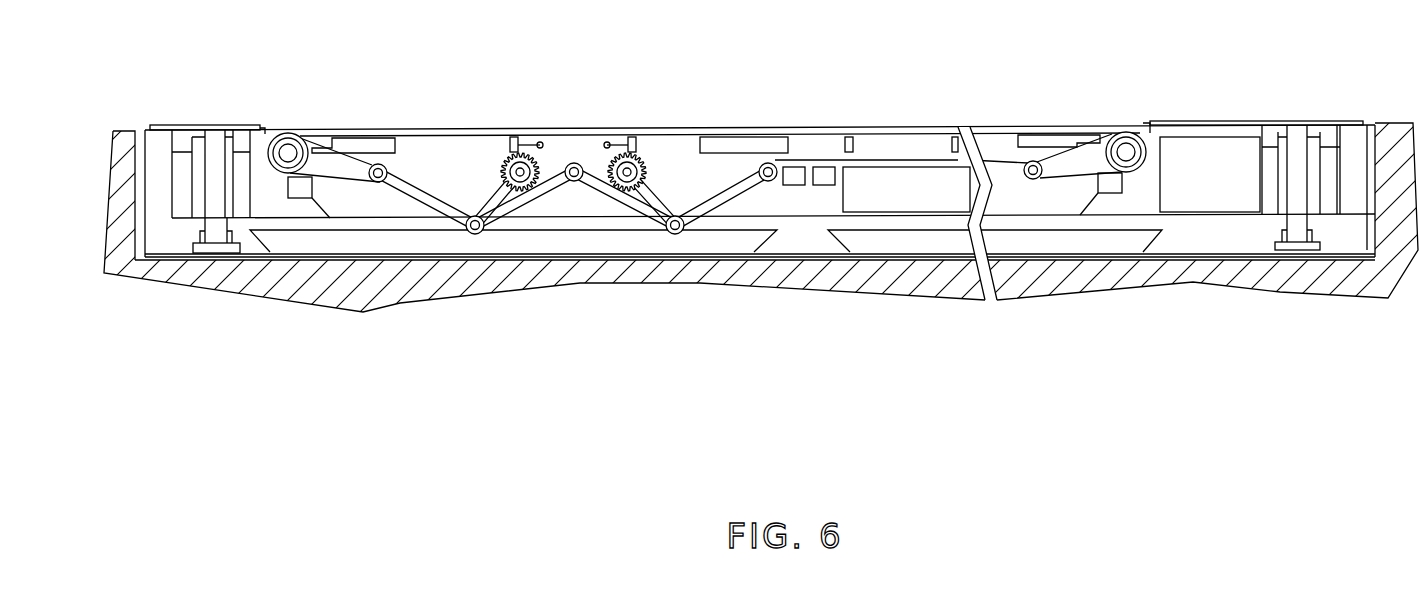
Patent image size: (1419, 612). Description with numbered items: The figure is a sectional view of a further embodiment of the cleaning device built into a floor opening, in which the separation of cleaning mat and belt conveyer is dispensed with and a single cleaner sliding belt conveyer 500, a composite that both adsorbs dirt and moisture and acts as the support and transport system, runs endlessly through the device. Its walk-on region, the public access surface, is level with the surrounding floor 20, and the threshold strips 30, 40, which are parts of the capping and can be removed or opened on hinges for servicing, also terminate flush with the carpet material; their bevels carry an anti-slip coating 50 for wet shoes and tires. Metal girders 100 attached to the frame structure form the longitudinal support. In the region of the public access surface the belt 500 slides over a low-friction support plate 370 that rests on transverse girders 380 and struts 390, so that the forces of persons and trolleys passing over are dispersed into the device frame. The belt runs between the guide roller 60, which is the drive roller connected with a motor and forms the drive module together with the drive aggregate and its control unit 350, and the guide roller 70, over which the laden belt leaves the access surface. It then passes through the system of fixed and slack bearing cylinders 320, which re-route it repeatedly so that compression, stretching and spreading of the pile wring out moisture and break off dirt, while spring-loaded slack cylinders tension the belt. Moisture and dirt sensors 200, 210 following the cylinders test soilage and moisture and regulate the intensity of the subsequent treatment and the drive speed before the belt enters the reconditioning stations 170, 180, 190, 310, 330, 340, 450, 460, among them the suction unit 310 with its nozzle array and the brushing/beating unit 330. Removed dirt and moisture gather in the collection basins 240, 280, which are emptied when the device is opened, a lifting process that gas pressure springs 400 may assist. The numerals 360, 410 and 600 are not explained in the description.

The surrounding floor 20 is at (122, 135).
The threshold strip 30 is at (268, 130).
The threshold strip 40 is at (268, 130).
The anti-slip coating 50 is at (158, 128).
The guide roller 60 is at (1130, 127).
The guide roller 70 is at (297, 133).
The metal girder 100 is at (340, 188).
The reconditioning station 170 is at (877, 309).
The reconditioning station 180 is at (877, 309).
The reconditioning station 190 is at (877, 309).
The moisture and dirt sensor 200 is at (792, 182).
The moisture and dirt sensor 210 is at (827, 180).
The collection basin 240 is at (343, 243).
The collection basin 280 is at (1077, 242).
The suction unit 310 is at (877, 309).
The bearing cylinders 320 is at (697, 220).
The brushing/beating unit 330 is at (877, 309).
The reconditioning station 340 is at (877, 309).
The control unit 350 is at (1213, 195).
The pin 360 is at (1040, 138).
The support plate 370 is at (575, 135).
The transverse girder 380 is at (1067, 135).
The strut 390 is at (855, 135).
The gas pressure spring 400 is at (1293, 140).
The bracket 410 is at (1108, 187).
The reconditioning station 450 is at (877, 309).
The reconditioning station 460 is at (898, 190).
The cleaner sliding belt conveyer 500 is at (457, 128).
The bottom plate 600 is at (150, 257).